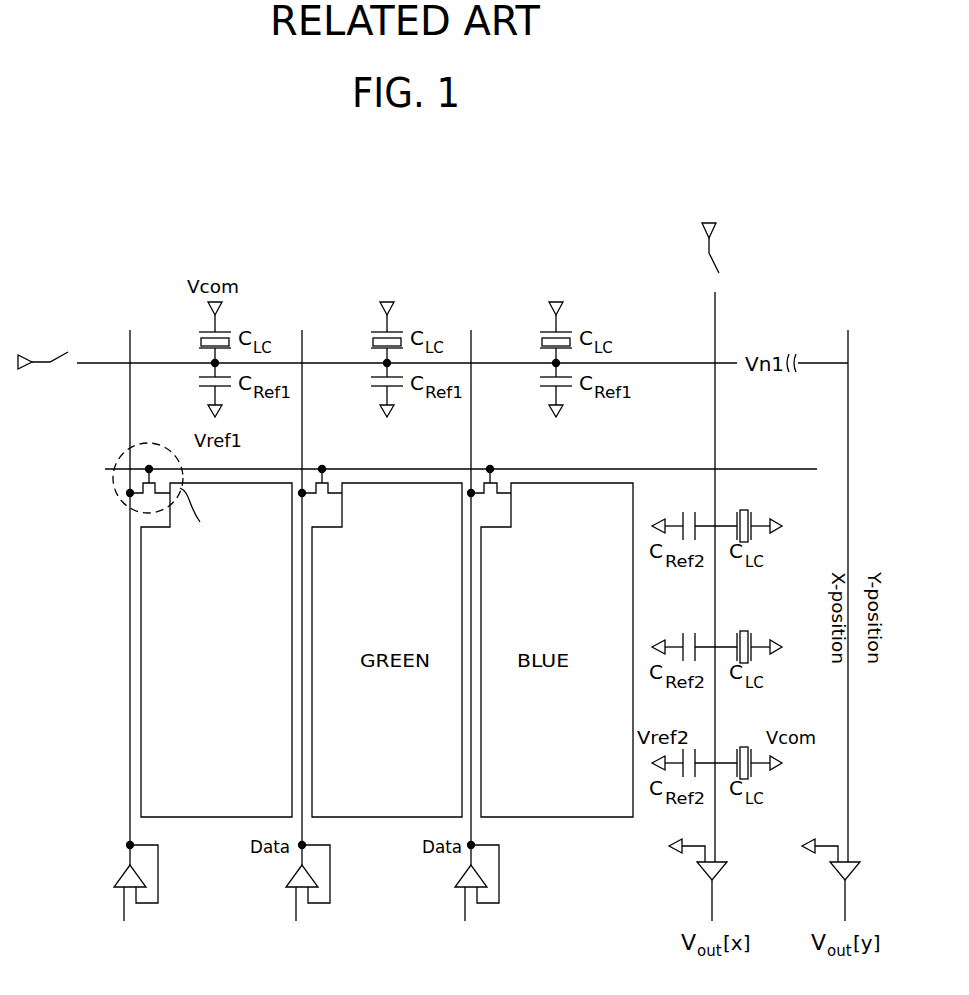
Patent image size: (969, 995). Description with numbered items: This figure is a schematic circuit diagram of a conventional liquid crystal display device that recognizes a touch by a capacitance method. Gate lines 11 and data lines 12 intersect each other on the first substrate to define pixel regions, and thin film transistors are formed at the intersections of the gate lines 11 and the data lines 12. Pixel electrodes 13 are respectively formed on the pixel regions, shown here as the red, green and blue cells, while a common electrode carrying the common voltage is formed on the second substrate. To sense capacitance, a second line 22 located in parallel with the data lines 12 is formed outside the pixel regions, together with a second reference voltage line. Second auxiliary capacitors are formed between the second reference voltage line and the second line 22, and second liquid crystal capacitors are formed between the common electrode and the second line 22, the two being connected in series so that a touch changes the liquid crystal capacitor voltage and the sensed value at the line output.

The gate line 11 is at (420, 468).
The data line 12 is at (99, 625).
The pixel electrode 13 is at (212, 818).
The second line 22 is at (715, 318).